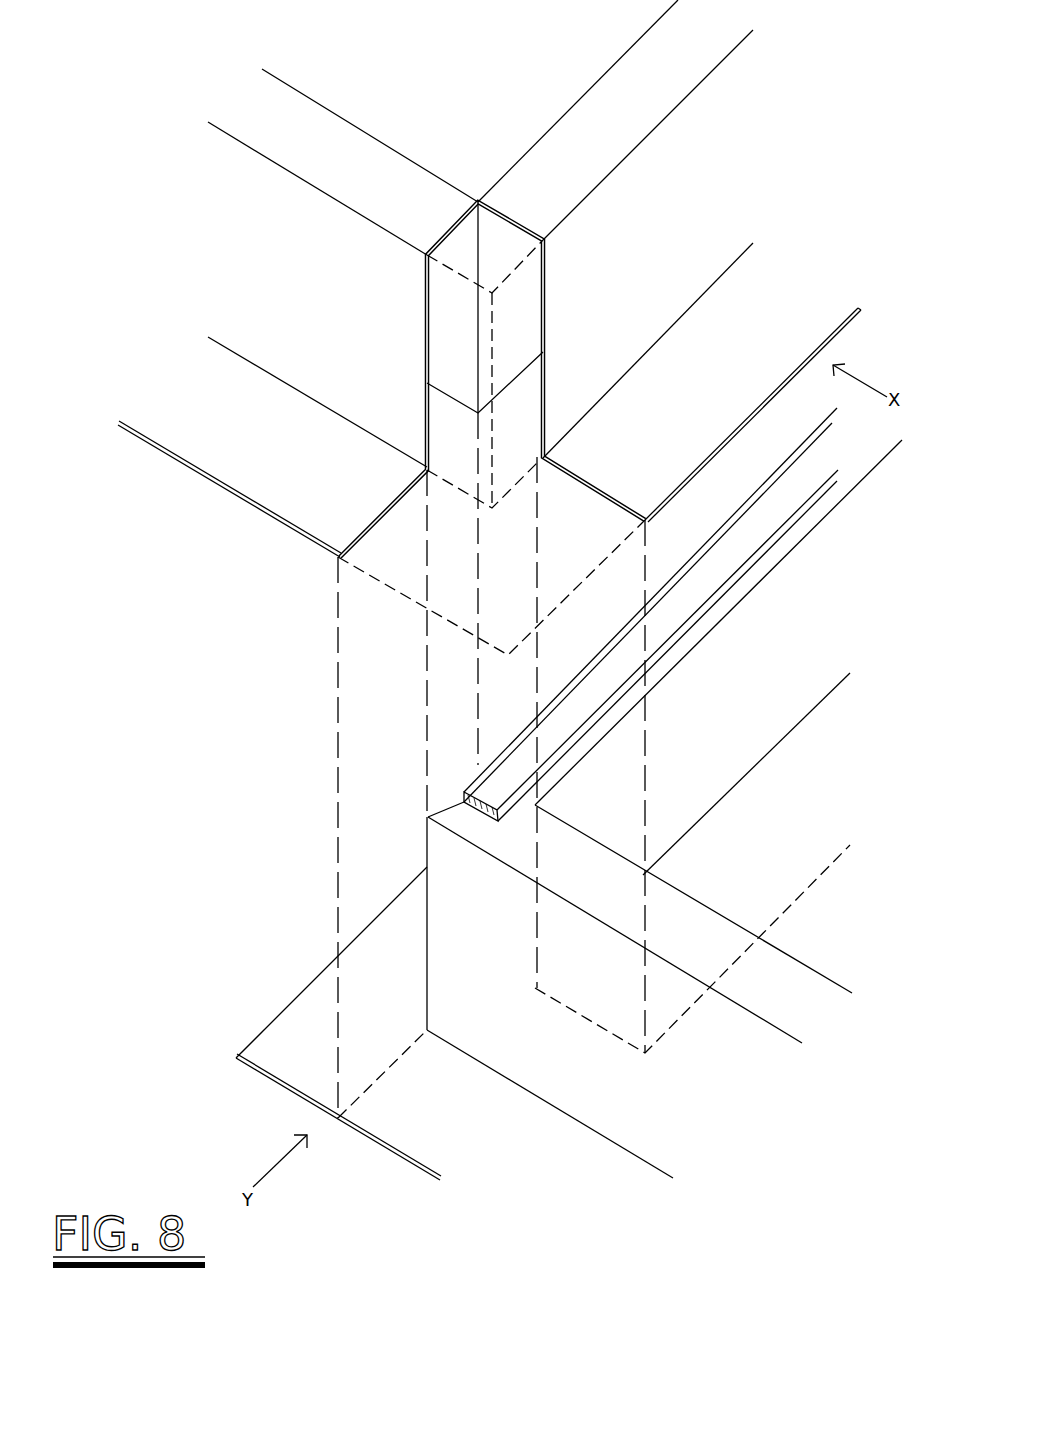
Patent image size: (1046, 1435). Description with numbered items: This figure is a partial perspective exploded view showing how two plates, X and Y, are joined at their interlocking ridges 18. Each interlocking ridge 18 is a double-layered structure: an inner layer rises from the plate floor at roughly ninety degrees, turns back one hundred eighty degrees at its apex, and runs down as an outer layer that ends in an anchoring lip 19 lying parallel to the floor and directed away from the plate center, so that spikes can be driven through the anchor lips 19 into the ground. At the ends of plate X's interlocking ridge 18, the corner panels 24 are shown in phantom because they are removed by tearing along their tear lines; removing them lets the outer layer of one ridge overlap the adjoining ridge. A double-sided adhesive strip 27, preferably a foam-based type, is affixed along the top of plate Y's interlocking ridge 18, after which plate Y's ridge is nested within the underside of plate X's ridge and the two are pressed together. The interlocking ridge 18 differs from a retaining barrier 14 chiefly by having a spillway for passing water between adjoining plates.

The retaining barrier 14 is at (393, 147).
The interlocking ridge 18 is at (569, 179).
The anchoring lip 19 is at (305, 474).
The corner panel 24 is at (584, 561).
The double-sided adhesive strip 27 is at (512, 800).